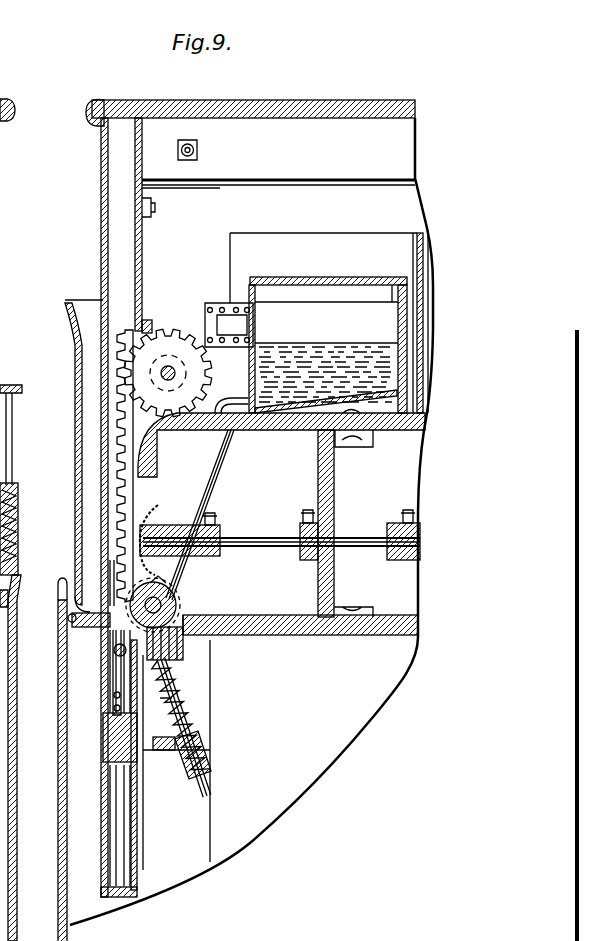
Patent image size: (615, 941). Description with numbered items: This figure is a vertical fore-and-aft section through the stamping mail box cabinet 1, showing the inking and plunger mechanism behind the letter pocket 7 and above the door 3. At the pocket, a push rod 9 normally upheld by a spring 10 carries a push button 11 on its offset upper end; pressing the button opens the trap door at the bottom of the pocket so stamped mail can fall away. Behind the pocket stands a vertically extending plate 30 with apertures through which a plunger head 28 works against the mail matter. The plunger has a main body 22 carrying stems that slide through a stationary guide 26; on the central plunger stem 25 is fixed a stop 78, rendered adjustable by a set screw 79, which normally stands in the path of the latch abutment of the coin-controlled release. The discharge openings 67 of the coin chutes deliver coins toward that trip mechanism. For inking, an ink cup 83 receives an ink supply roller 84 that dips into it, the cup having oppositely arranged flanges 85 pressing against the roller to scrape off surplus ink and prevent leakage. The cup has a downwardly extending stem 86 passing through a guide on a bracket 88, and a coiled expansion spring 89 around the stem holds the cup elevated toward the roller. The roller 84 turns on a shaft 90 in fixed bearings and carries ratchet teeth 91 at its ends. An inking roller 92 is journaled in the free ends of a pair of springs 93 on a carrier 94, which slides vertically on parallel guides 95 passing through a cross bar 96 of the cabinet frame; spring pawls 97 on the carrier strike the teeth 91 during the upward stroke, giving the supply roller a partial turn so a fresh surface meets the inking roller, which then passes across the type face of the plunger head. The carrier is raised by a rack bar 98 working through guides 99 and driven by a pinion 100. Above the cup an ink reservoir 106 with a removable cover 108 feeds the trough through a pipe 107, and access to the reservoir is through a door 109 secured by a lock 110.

The casing 1 is at (17, 742).
The door 3 is at (58, 808).
The pocket 7 is at (76, 466).
The push rod 9 is at (12, 424).
The spring 10 is at (19, 520).
The push button 11 is at (17, 385).
The main body of the plunger 22 is at (403, 561).
The central plunger stem 25 is at (262, 535).
The stationary guide 26 is at (336, 485).
The plunger head 28 is at (160, 512).
The vertically extending plate 30 is at (143, 240).
The discharge openings 67 is at (188, 770).
The stop 78 is at (304, 561).
The set screw 79 is at (305, 512).
The ink cup 83 is at (185, 640).
The ink supply roller 84 is at (178, 600).
The flanges 85 is at (190, 618).
The stem 86 is at (208, 764).
The bracket 88 is at (145, 808).
The coiled expansion spring 89 is at (186, 690).
The shaft 90 is at (60, 612).
The ratchet teeth 91 is at (160, 581).
The inking roller 92 is at (114, 650).
The springs 93 is at (112, 674).
The carrier 94 is at (110, 575).
The guides 95 is at (117, 812).
The cross bar 96 is at (104, 735).
The spring pawls 97 is at (70, 620).
The rack bar 98 is at (124, 430).
The guides 99 is at (104, 372).
The pinion 100 is at (175, 340).
The ink reservoir 106 is at (328, 349).
The pipe 107 is at (214, 452).
The removable cover 108 is at (345, 279).
The door 109 is at (258, 240).
The lock 110 is at (205, 318).